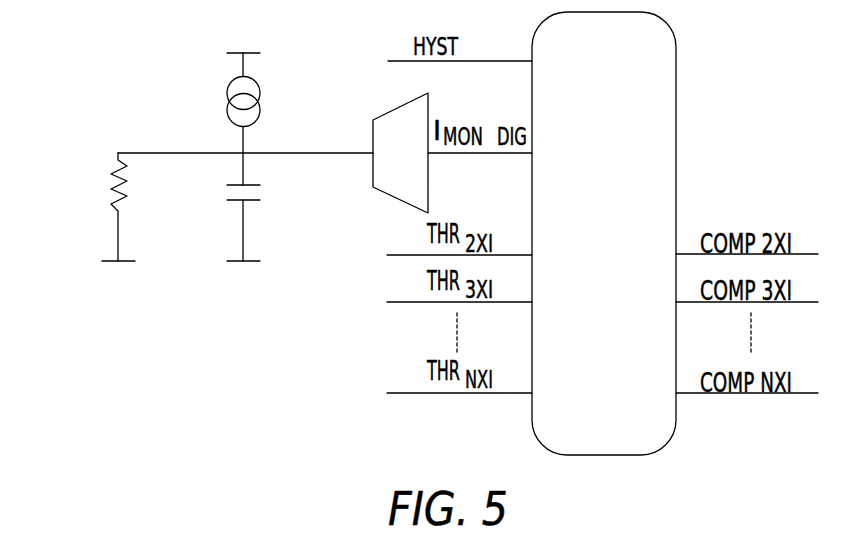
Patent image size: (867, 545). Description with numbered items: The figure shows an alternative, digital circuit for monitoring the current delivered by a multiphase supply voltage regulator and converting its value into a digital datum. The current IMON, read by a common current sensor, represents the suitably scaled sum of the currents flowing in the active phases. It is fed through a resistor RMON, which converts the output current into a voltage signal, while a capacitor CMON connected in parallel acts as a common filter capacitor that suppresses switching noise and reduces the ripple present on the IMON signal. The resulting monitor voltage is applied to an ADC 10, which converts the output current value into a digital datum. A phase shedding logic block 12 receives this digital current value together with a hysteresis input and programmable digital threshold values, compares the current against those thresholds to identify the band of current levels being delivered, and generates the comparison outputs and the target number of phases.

The ADC 10 is at (402, 103).
The phase shedding logic block 12 is at (677, 103).
The current IMON is at (211, 103).
The resistor RMON is at (88, 207).
The capacitor CMON is at (209, 207).